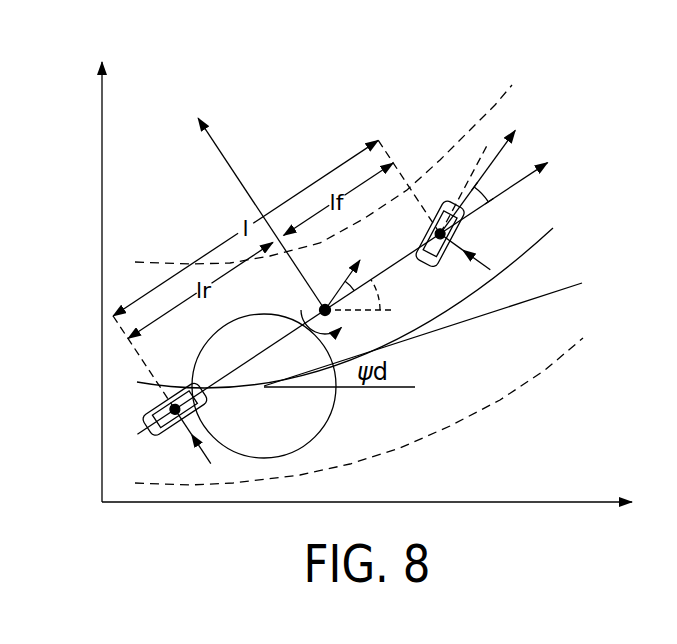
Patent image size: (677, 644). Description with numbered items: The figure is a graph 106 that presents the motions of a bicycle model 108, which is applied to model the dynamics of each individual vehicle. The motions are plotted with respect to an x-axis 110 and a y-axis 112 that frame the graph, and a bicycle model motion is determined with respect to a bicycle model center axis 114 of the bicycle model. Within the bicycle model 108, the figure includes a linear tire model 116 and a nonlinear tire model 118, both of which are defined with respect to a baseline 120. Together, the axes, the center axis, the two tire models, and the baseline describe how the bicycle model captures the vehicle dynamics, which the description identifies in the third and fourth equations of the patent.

The graph 106 is at (417, 95).
The bicycle model 108 is at (388, 270).
The x-axis 110 is at (263, 503).
The y-axis 112 is at (102, 278).
The bicycle model center axis 114 is at (318, 304).
The linear tire model 116 is at (166, 404).
The nonlinear tire model 118 is at (466, 232).
The baseline 120 is at (537, 243).